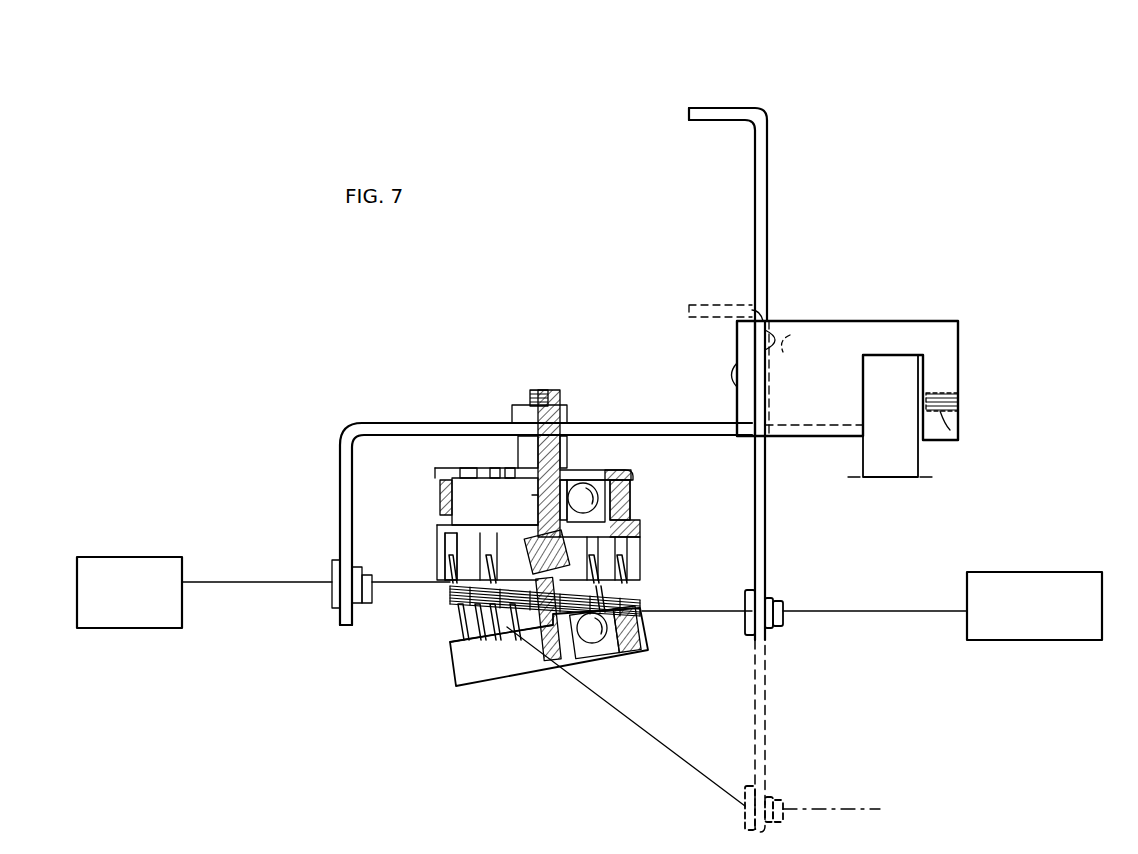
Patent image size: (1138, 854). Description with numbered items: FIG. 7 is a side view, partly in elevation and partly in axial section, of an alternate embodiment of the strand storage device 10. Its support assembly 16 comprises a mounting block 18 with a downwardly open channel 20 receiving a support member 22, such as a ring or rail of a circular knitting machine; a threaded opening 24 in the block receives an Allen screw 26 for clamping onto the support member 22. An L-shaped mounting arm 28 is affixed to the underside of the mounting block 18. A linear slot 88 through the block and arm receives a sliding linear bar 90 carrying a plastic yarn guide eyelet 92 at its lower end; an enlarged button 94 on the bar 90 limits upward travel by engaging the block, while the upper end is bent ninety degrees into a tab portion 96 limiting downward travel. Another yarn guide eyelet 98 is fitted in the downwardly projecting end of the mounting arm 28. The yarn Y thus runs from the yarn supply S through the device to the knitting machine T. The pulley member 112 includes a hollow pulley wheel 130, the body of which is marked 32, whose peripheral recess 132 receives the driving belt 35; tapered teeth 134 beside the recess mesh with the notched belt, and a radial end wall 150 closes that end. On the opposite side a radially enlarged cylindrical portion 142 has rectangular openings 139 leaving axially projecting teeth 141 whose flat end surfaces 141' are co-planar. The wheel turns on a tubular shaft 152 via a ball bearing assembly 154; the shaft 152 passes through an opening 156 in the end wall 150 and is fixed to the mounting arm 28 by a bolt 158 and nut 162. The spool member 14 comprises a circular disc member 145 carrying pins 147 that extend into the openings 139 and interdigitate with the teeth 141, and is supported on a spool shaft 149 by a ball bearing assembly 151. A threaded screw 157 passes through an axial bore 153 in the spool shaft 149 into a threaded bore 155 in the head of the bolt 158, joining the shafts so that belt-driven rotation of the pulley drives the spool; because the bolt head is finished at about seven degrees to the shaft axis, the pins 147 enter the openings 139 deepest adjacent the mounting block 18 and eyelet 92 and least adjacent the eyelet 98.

The strand storage device 10 is at (398, 676).
The spool member 14 is at (458, 686).
The support assembly 16 is at (778, 442).
The mounting block 18 is at (812, 385).
The downwardly open channel 20 is at (925, 445).
The support member 22 is at (902, 413).
The threaded opening 24 is at (950, 420).
The Allen screw 26 is at (958, 402).
The L-shaped mounting arm 28 is at (398, 424).
The body 32 is at (494, 511).
The driving belt 35 is at (440, 496).
The linear slot 88 is at (774, 320).
The linear bar 90 is at (768, 208).
The yarn guide eyelet 92 is at (778, 626).
The enlarged button 94 is at (745, 440).
The tab portion 96 is at (714, 118).
The yarn guide eyelet 98 is at (368, 606).
The pulley member 112 is at (442, 525).
The pulley wheel 130 is at (472, 470).
The circumferential peripheral recess 132 is at (620, 498).
The tapered teeth 134 is at (436, 470).
The rectangular openings 139 is at (462, 558).
The axially projecting teeth 141 is at (534, 560).
The end surfaces 141' is at (574, 599).
The radially enlarged cylindrical portion 142 is at (440, 536).
The circular disc member 145 is at (504, 669).
The pins 147 is at (462, 628).
The spool shaft 149 is at (592, 644).
The radial end wall 150 is at (588, 494).
The ball bearing assembly 151 is at (632, 650).
The tubular shaft 152 is at (570, 442).
The axial bore 153 is at (600, 680).
The ball bearing assembly 154 is at (632, 470).
The threaded bore 155 is at (538, 512).
The opening 156 is at (562, 475).
The threaded screw 157 is at (545, 662).
The bolt 158 is at (522, 442).
The nut 162 is at (556, 406).
The yarn supply S is at (172, 628).
The knitting machine T is at (1082, 572).
The yarn Y is at (262, 583).